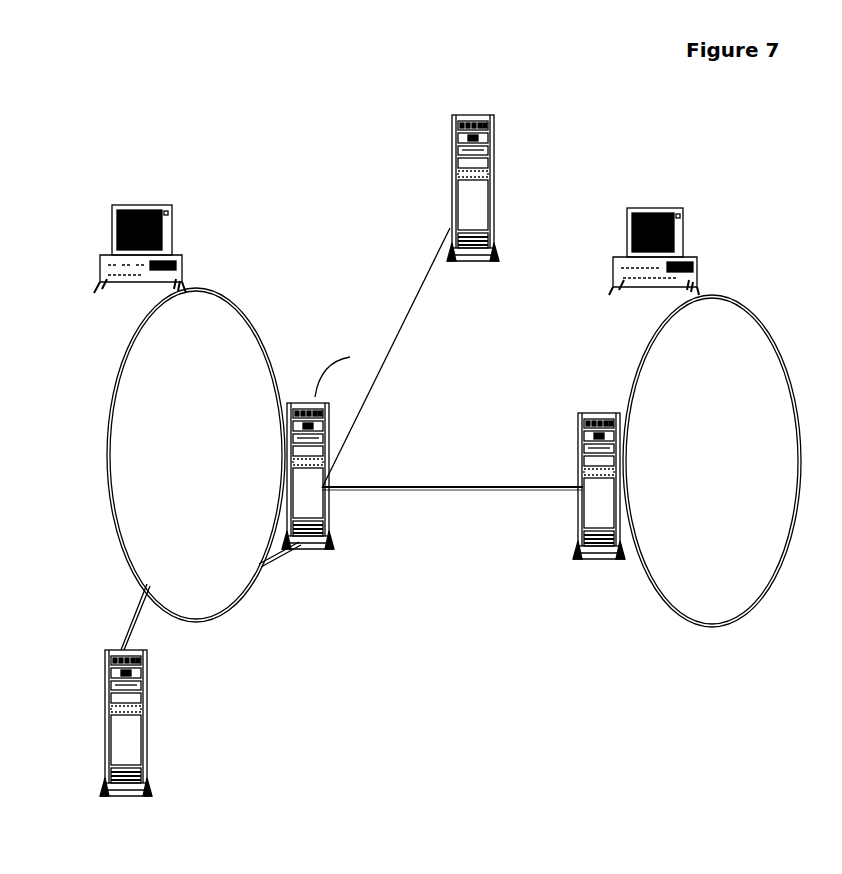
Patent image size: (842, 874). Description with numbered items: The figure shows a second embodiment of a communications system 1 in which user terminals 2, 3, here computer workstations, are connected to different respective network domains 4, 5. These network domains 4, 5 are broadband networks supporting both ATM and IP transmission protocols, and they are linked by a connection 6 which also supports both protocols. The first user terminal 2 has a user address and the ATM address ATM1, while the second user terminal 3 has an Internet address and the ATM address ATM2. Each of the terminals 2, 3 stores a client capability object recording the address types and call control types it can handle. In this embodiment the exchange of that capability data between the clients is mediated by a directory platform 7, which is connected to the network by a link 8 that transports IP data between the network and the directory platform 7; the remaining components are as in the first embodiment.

The communications system 1 is at (503, 672).
The user terminal 2 is at (142, 182).
The user terminal 3 is at (657, 187).
The network domain 4 is at (202, 628).
The network domain 5 is at (700, 630).
The connection 6 is at (423, 492).
The directory platform 7 is at (492, 188).
The link 8 is at (395, 342).